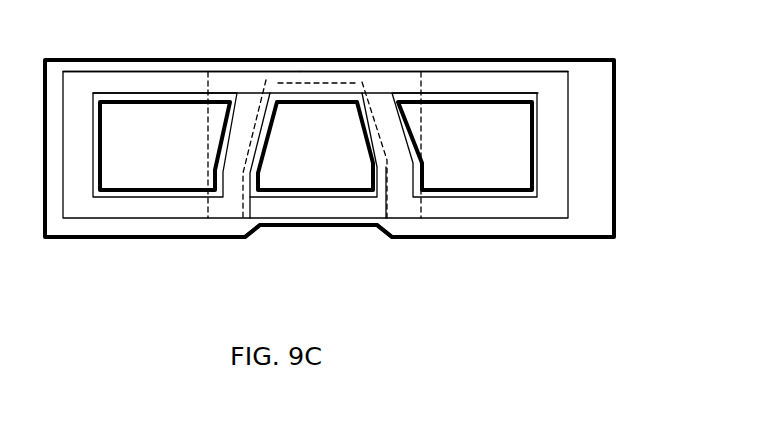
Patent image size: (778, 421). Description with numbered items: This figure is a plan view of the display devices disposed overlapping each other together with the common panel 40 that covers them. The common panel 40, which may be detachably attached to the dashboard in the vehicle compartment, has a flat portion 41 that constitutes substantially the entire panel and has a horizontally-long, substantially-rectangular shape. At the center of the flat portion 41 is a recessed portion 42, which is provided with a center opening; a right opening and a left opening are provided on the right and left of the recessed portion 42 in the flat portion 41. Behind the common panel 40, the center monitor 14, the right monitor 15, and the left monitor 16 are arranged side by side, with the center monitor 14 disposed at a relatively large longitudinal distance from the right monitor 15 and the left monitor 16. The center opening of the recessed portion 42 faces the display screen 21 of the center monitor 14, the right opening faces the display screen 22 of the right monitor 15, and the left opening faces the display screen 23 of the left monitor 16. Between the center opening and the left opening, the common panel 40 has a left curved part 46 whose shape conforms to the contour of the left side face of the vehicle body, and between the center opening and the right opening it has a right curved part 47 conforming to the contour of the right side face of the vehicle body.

The center monitor 14 is at (315, 82).
The right monitor 15 is at (498, 71).
The left monitor 16 is at (113, 70).
The display screen 21 is at (300, 165).
The display screen 22 is at (500, 167).
The display screen 23 is at (148, 175).
The common panel 40 is at (592, 80).
The flat portion 41 is at (590, 205).
The recessed portion 42 is at (343, 236).
The left curved part 46 is at (247, 118).
The right curved part 47 is at (391, 105).